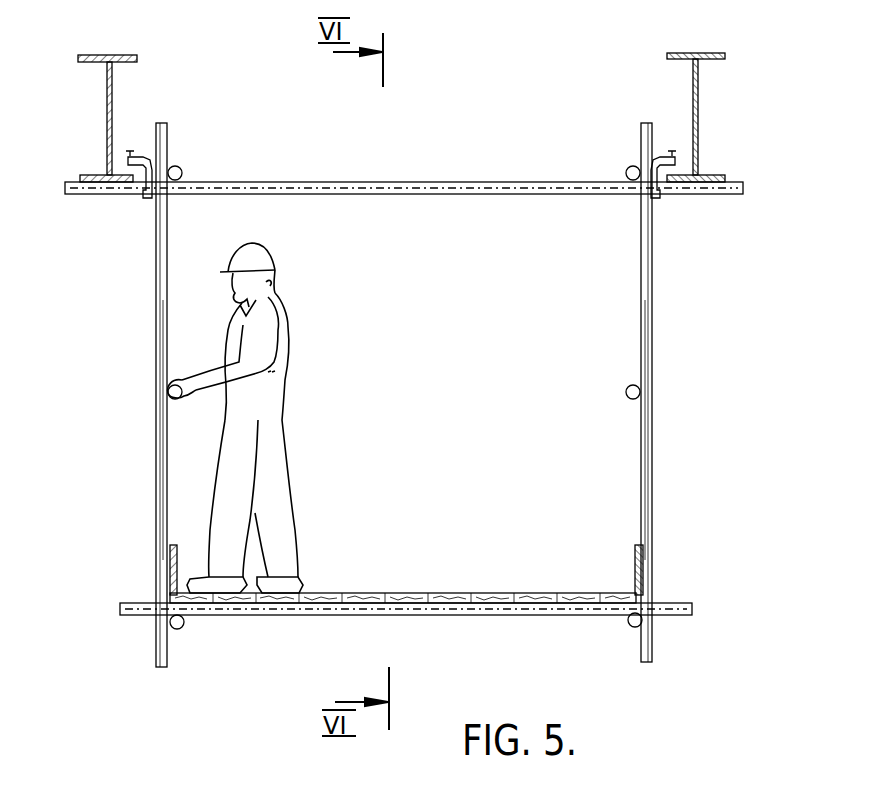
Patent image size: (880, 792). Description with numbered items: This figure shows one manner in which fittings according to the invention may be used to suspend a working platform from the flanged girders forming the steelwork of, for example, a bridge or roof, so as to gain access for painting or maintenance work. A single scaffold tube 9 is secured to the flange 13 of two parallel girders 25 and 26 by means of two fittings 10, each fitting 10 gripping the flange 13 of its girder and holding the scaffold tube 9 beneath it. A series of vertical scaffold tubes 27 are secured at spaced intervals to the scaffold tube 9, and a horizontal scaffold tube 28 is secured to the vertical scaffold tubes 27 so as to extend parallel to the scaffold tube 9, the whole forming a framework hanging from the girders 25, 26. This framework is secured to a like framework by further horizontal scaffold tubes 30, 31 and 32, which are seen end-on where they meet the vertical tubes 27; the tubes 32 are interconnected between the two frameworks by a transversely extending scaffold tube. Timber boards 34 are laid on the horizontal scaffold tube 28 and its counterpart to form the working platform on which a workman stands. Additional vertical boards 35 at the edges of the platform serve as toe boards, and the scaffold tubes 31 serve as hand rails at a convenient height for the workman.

The scaffold tube 9 is at (86, 195).
The fitting 10 is at (146, 165).
The flange 13 is at (125, 175).
The girder 25 is at (78, 57).
The girder 26 is at (725, 55).
The vertical scaffold tube 27 is at (158, 505).
The horizontal scaffold tube 28 is at (310, 615).
The horizontal scaffold tube 30 is at (182, 168).
The horizontal scaffold tube 31 is at (168, 392).
The horizontal scaffold tube 32 is at (183, 628).
The timber board 34 is at (400, 593).
The vertical board 35 is at (172, 570).